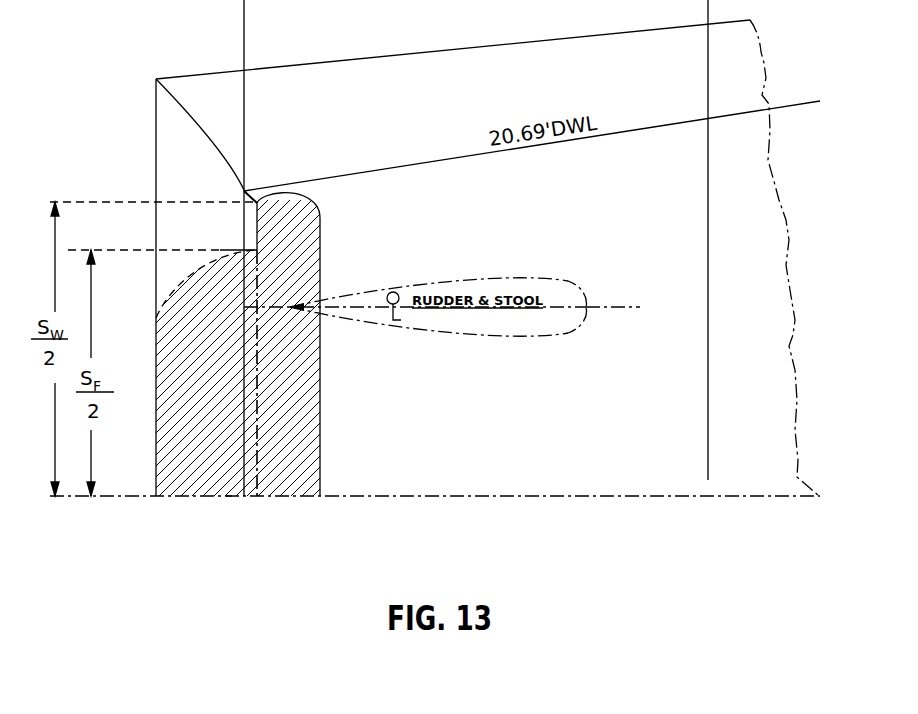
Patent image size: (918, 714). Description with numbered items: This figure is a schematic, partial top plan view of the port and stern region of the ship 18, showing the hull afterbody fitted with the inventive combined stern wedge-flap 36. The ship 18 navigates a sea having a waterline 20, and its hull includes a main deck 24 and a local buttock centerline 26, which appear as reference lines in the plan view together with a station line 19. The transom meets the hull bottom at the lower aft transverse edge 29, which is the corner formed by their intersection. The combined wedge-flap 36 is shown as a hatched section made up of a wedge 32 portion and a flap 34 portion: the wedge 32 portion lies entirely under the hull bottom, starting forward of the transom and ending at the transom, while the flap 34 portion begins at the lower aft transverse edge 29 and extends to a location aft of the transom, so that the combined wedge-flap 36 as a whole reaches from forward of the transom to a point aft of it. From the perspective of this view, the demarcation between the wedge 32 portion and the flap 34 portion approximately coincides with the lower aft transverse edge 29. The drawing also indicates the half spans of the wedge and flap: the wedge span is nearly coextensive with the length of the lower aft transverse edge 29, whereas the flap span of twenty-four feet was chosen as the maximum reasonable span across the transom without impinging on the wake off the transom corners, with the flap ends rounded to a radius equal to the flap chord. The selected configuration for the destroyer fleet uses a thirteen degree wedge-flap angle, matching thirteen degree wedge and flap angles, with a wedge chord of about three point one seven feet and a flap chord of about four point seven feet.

The ship 18 is at (793, 256).
The station 19 is at (705, 264).
The waterline 20 is at (243, 388).
The main deck 24 is at (150, 180).
The buttock centerline 26 is at (452, 500).
The lower aft transverse edge 29 is at (262, 232).
The stern wedge 32 is at (290, 472).
The stern flap 34 is at (191, 466).
The combined stern wedge-flap 36 is at (227, 505).